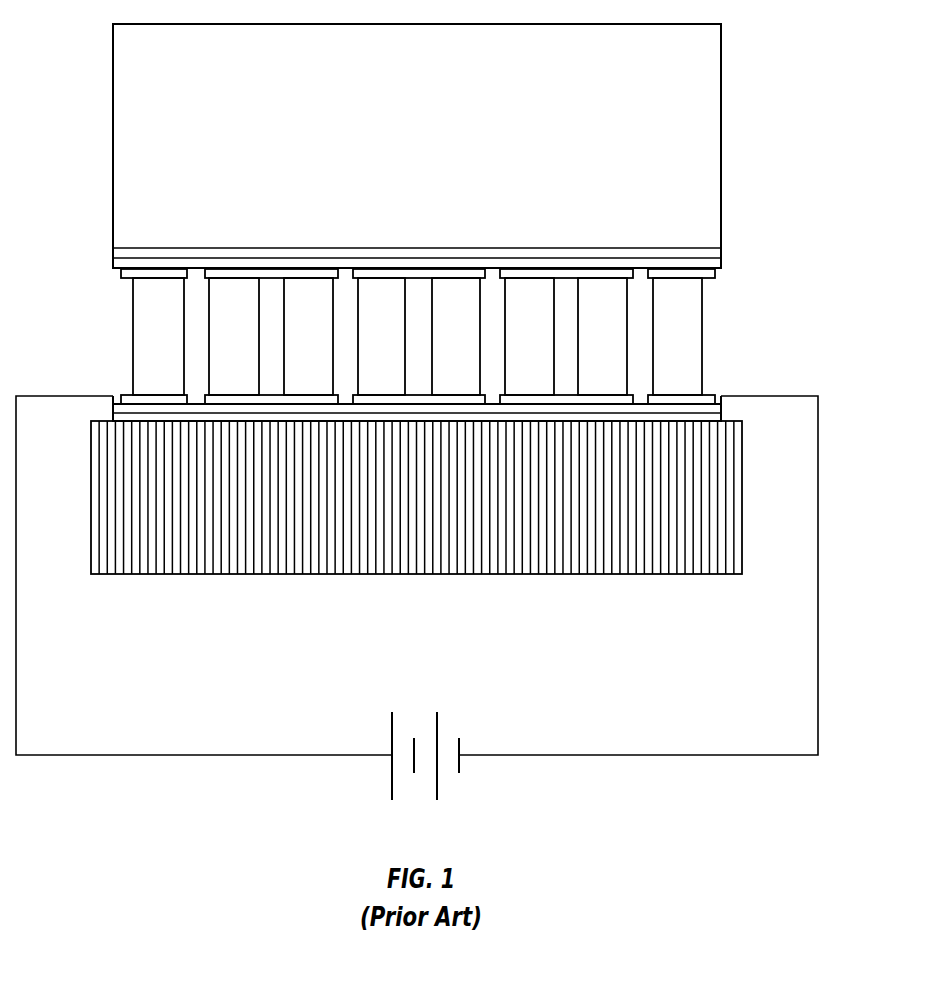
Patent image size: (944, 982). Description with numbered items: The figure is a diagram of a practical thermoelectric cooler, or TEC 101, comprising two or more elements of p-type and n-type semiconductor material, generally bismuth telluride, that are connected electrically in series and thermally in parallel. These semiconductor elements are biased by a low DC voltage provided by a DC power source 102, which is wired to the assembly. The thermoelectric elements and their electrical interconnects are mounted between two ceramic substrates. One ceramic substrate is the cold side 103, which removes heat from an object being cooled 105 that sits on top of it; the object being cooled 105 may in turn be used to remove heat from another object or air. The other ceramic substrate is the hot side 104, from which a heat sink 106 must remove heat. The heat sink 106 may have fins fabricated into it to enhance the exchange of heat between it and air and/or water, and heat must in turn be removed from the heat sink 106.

The TEC 101 is at (133, 335).
The DC power source 102 is at (437, 725).
The cold side 103 is at (718, 274).
The hot side 104 is at (723, 403).
The object being cooled 105 is at (722, 162).
The heat sink 106 is at (158, 574).